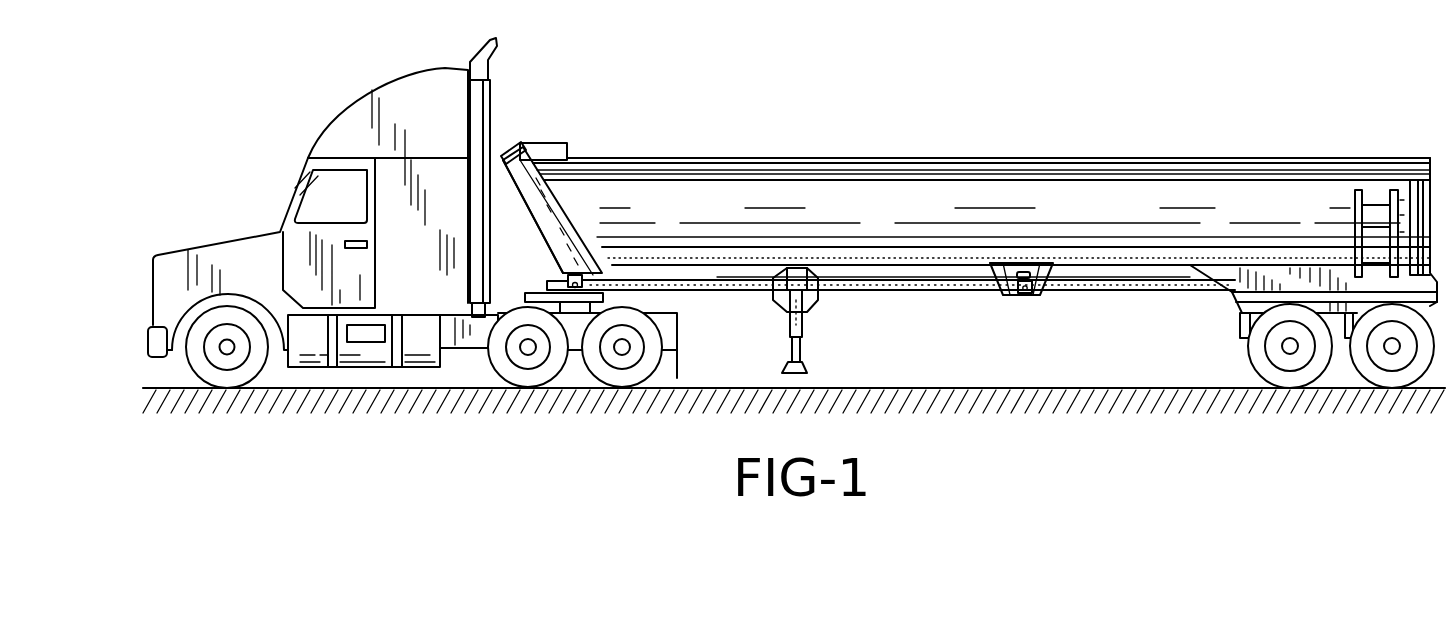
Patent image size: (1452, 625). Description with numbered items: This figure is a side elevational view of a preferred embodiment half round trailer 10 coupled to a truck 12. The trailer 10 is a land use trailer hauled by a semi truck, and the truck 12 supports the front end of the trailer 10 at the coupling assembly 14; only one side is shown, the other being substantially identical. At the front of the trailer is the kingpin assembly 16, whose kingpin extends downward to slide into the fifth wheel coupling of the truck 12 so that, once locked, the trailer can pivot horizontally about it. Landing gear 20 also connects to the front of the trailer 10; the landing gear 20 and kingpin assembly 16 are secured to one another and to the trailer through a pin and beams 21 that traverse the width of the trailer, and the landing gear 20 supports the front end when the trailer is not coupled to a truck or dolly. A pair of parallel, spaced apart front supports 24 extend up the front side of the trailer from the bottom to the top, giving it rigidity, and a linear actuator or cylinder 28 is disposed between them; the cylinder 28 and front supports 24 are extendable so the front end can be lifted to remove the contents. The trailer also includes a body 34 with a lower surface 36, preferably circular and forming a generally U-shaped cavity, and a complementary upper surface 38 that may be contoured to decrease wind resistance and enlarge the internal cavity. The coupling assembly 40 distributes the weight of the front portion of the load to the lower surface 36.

The half round trailer 10 is at (929, 231).
The truck 12 is at (282, 184).
The coupling assembly 14 is at (558, 304).
The kingpin assembly 16 is at (535, 285).
The landing gear 20 is at (803, 320).
The beams 21 is at (958, 292).
The front supports 24 is at (558, 220).
The linear actuator or cylinder 28 is at (542, 237).
The body 34 is at (873, 204).
The lower surface 36 is at (1123, 283).
The upper surface 38 is at (1110, 158).
The coupling assembly 40 is at (551, 272).